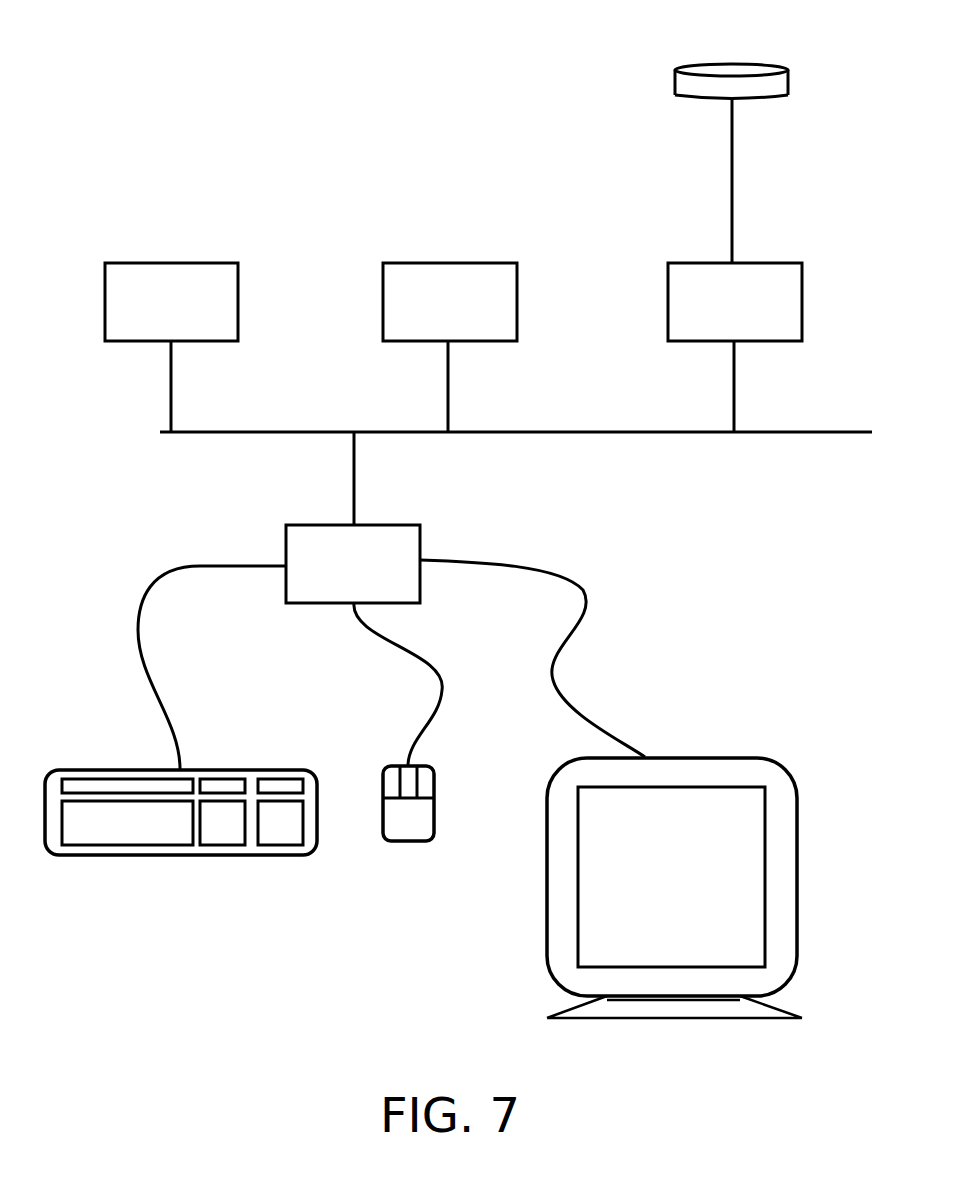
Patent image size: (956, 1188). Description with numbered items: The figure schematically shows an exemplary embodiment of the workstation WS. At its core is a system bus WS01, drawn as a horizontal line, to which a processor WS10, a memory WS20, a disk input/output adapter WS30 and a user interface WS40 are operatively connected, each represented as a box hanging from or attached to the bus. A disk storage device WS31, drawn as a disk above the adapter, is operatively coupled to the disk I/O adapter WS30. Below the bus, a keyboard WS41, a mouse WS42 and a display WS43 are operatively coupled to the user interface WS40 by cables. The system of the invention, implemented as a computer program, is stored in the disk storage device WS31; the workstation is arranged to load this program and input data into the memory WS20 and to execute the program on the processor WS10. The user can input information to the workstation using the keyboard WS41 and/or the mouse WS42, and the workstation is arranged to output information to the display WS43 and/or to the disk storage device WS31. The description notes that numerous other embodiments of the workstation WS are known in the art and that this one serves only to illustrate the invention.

The workstation WS is at (142, 104).
The system bus WS01 is at (160, 432).
The processor WS10 is at (171, 347).
The memory WS20 is at (450, 347).
The disk input/output adapter WS30 is at (735, 347).
The disk storage device WS31 is at (676, 82).
The user interface WS40 is at (391, 600).
The keyboard WS41 is at (155, 855).
The mouse WS42 is at (408, 841).
The display WS43 is at (797, 843).